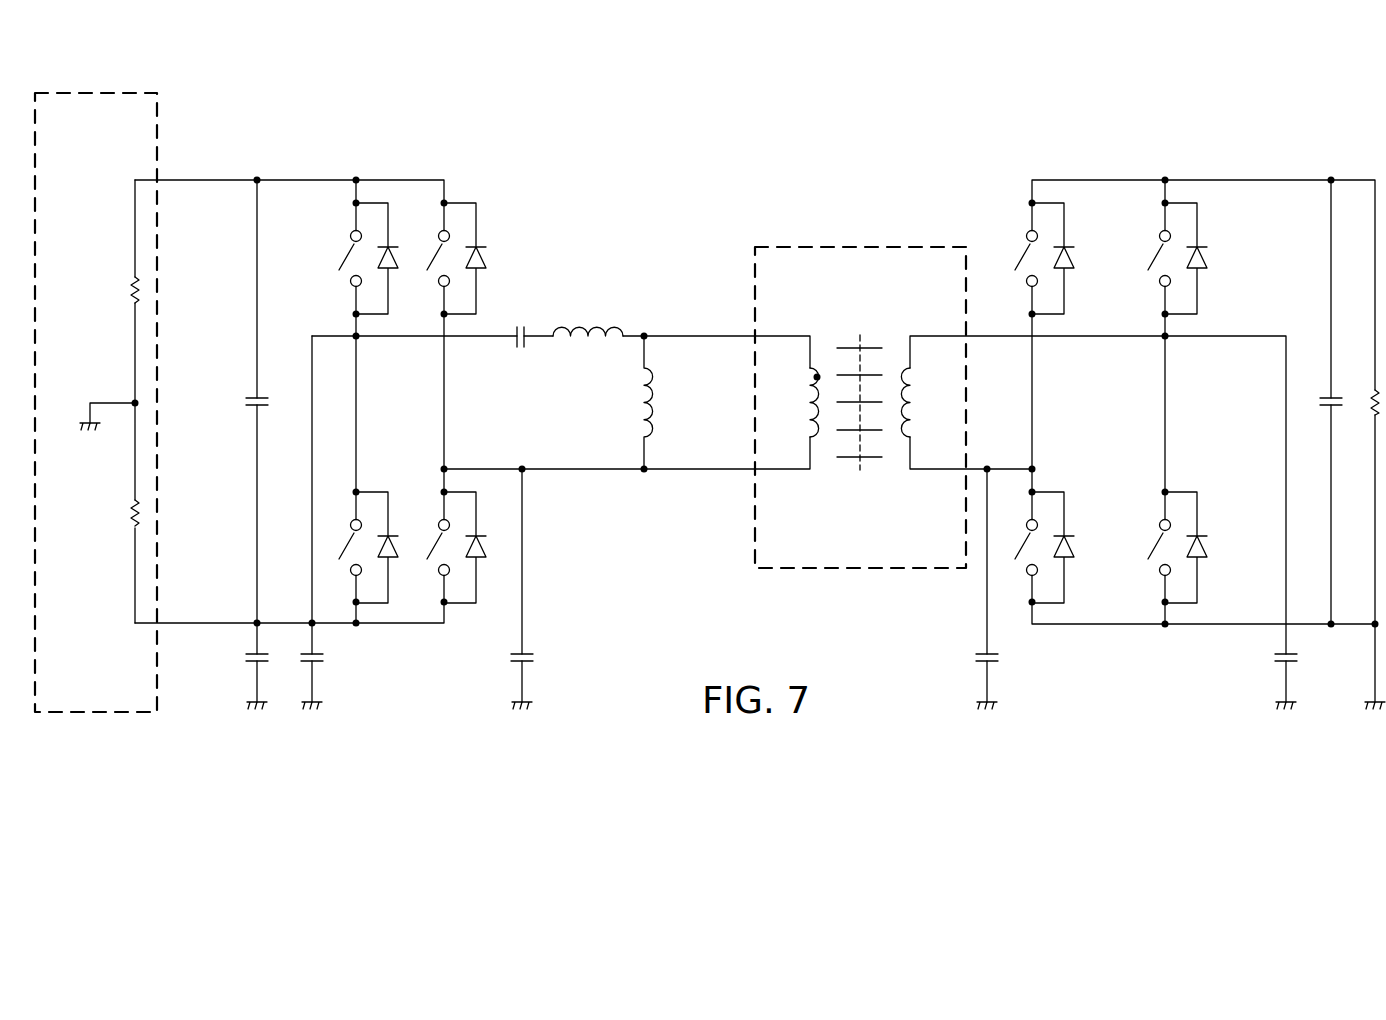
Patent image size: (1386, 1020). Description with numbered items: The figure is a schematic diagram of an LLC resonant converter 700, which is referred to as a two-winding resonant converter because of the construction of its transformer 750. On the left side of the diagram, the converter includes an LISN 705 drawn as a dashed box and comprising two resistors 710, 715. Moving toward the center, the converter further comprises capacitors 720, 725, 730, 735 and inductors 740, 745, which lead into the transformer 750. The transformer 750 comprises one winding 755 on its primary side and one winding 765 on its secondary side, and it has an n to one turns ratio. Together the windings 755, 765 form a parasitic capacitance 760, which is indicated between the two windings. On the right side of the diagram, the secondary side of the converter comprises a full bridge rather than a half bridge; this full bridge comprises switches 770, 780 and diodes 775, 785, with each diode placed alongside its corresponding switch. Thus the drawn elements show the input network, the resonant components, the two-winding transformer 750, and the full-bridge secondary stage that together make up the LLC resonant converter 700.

The LLC resonant converter 700 is at (544, 68).
The LISN 705 is at (93, 86).
The resistor 710 is at (133, 291).
The resistor 715 is at (133, 512).
The capacitor 720 is at (254, 657).
The capacitor 725 is at (315, 657).
The capacitor 730 is at (519, 657).
The capacitor 735 is at (522, 324).
The inductor 740 is at (599, 318).
The inductor 745 is at (663, 408).
The transformer 750 is at (873, 238).
The winding 755 is at (818, 440).
The parasitic capacitance 760 is at (870, 486).
The winding 765 is at (902, 440).
The switch 770 is at (1152, 253).
The diode 775 is at (1204, 253).
The switch 780 is at (1152, 542).
The diode 785 is at (1204, 542).